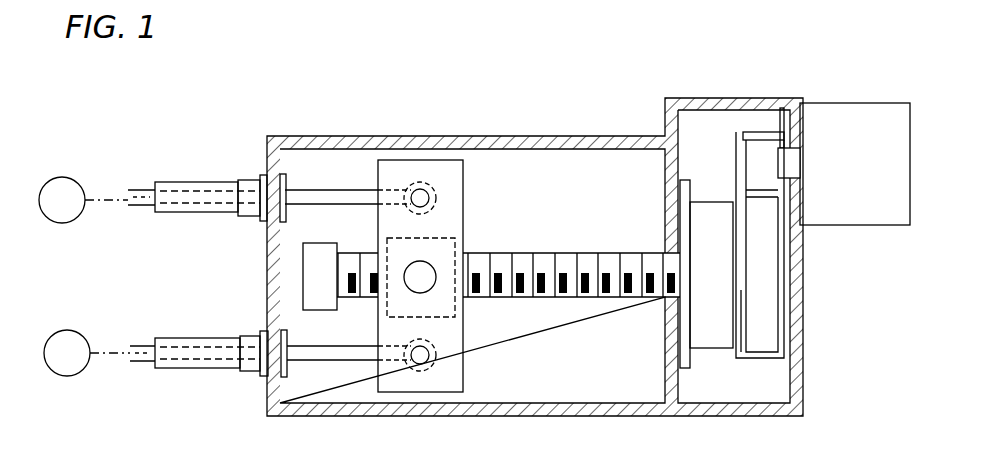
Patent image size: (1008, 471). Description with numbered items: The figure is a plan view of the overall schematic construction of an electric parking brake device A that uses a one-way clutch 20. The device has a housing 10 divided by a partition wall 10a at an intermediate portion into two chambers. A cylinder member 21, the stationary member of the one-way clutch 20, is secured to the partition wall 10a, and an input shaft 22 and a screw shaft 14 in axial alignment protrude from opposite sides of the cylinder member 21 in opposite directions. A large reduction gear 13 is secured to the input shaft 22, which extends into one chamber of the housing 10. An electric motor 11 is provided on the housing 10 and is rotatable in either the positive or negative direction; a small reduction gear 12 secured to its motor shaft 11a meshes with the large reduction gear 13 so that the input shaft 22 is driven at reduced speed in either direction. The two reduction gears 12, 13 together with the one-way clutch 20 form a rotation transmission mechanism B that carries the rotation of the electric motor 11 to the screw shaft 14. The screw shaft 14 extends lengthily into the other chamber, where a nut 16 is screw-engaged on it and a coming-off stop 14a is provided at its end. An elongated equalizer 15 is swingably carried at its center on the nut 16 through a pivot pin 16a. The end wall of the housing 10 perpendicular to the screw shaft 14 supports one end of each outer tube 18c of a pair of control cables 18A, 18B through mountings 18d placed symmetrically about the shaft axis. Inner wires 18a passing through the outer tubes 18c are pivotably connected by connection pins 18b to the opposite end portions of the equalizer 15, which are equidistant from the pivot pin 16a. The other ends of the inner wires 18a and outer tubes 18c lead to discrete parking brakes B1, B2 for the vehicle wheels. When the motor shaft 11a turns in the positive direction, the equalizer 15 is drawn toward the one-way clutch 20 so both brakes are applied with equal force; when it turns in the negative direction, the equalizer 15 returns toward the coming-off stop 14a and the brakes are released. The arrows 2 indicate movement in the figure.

The housing 10 is at (517, 137).
The partition wall 10a is at (672, 321).
The electric motor 11 is at (846, 105).
The motor shaft 11a is at (782, 108).
The small reduction gear 12 is at (745, 152).
The large reduction gear 13 is at (776, 322).
The screw shaft 14 is at (566, 258).
The coming-off stop 14a is at (313, 245).
The equalizer 15 is at (400, 165).
The nut 16 is at (455, 240).
The pivot pin 16a is at (427, 282).
The control cable 18A is at (196, 213).
The control cable 18B is at (187, 370).
The inner wire 18a is at (305, 196).
The connection pin 18b is at (436, 190).
The outer tube 18c is at (205, 183).
The mounting 18d is at (250, 214).
The one-way clutch 20 is at (742, 238).
The cylinder member 21 is at (730, 268).
The input shaft 22 is at (741, 355).
The movement direction 2 is at (716, 212).
The electric parking brake device A is at (634, 81).
The rotation transmission mechanism B is at (635, 237).
The parking brake B1 is at (83, 200).
The parking brake B2 is at (87, 353).